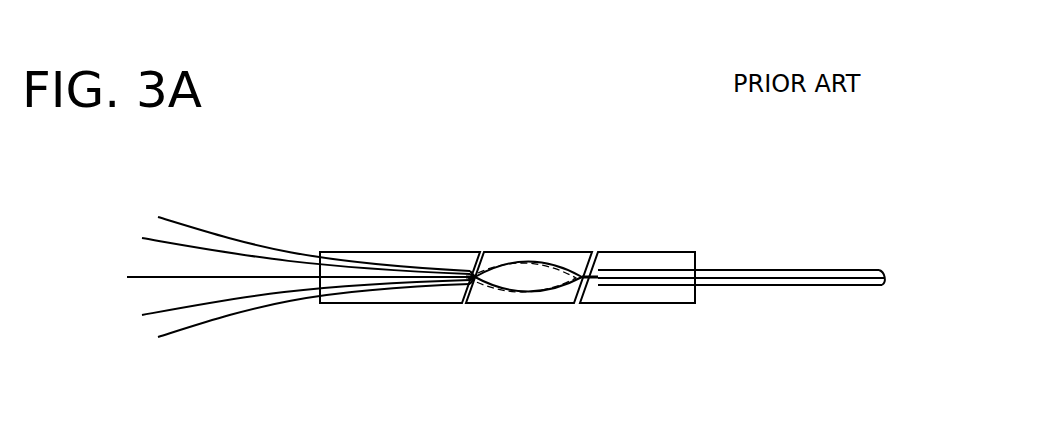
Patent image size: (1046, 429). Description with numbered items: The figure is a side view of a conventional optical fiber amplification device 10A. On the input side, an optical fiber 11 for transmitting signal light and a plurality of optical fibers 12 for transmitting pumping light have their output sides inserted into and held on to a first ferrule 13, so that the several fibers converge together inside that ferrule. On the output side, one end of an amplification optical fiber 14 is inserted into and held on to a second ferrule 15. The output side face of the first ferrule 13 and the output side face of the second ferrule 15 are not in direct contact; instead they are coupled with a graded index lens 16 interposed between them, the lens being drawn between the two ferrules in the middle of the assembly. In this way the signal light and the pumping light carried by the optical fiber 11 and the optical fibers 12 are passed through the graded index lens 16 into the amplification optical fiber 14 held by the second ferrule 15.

The amplification device 10A is at (507, 284).
The optical fiber 11 is at (150, 279).
The optical fibers 12 is at (208, 252).
The first ferrule 13 is at (363, 252).
The amplification optical fiber 14 is at (757, 275).
The second ferrule 15 is at (653, 305).
The graded index lens 16 is at (538, 252).